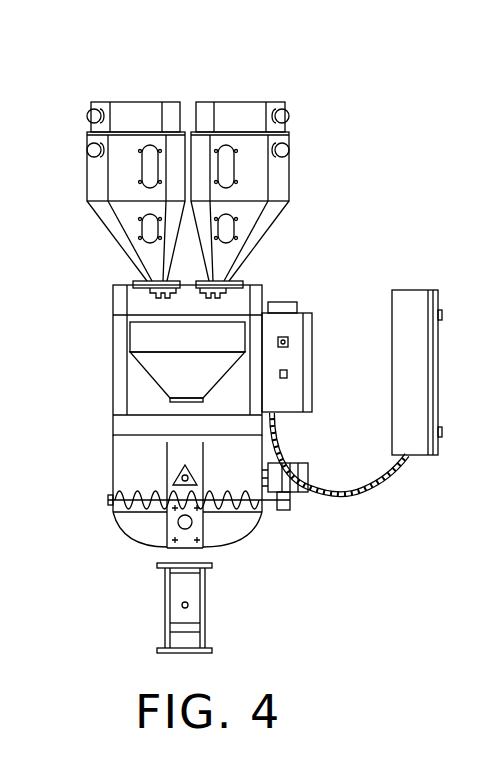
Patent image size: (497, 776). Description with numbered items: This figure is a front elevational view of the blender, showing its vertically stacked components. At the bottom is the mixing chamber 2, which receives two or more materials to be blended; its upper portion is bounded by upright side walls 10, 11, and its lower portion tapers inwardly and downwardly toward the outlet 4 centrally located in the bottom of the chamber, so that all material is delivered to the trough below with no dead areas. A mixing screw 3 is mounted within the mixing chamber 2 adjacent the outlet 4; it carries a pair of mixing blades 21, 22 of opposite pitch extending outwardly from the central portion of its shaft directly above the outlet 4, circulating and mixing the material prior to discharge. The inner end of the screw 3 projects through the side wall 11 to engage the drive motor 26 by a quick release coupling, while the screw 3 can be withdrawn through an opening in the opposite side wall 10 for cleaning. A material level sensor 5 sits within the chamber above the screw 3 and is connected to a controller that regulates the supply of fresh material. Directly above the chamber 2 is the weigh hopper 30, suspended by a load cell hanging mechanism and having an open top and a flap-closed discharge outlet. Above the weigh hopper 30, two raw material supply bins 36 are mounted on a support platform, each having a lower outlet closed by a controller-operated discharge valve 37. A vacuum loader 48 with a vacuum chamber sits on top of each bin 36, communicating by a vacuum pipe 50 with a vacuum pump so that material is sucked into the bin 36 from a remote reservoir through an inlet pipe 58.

The mixing chamber 2 is at (113, 352).
The mixing screw 3 is at (222, 505).
The outlet 4 is at (180, 535).
The material level sensor 5 is at (185, 468).
The side wall 10 is at (113, 470).
The side wall 11 is at (273, 433).
The mixing blade 21 is at (130, 520).
The mixing blade 22 is at (235, 520).
The drive motor 26 is at (300, 456).
The weigh hopper 30 is at (148, 370).
The raw material supply bin 36 is at (118, 230).
The discharge valve 37 is at (245, 291).
The vacuum loader 48 is at (226, 102).
The vacuum pipe 50 is at (90, 111).
The inlet pipe 58 is at (88, 153).